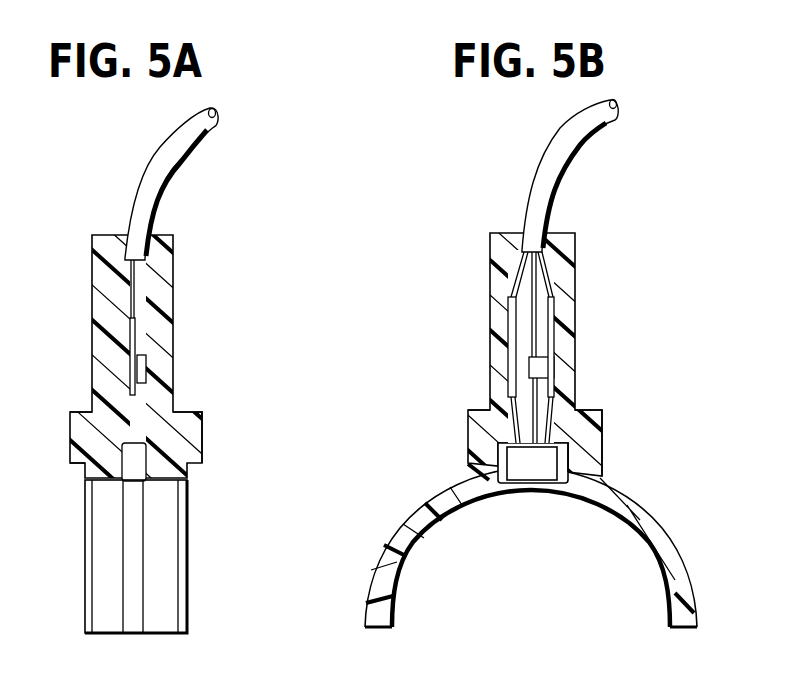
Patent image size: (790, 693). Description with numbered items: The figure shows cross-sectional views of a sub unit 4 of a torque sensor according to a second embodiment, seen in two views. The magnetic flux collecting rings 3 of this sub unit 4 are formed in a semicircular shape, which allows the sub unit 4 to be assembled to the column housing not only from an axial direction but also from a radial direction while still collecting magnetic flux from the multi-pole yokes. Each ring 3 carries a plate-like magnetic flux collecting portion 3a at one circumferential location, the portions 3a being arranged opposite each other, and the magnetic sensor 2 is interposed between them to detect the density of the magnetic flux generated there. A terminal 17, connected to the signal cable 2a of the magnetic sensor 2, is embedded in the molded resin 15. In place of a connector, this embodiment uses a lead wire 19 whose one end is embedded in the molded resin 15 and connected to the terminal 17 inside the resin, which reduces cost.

In FIG. 5A, the magnetic sensor 2 is at (135, 459).
In FIG. 5B, the magnetic sensor 2 is at (550, 462).
In FIG. 5A, the signal cable 2a is at (97, 403).
In FIG. 5B, the signal cable 2a is at (492, 425).
In FIG. 5B, the magnetic flux collecting ring 3 is at (622, 512).
In FIG. 5A, the magnetic flux collecting portion 3a is at (73, 448).
In FIG. 5B, the magnetic flux collecting portion 3a is at (503, 460).
In FIG. 5A, the sub unit 4 is at (189, 259).
In FIG. 5B, the sub unit 4 is at (587, 257).
In FIG. 5A, the molded resin 15 is at (203, 414).
In FIG. 5B, the molded resin 15 is at (603, 416).
In FIG. 5A, the terminal 17 is at (130, 335).
In FIG. 5B, the terminal 17 is at (553, 313).
In FIG. 5A, the lead wire 19 is at (152, 157).
In FIG. 5B, the lead wire 19 is at (548, 153).